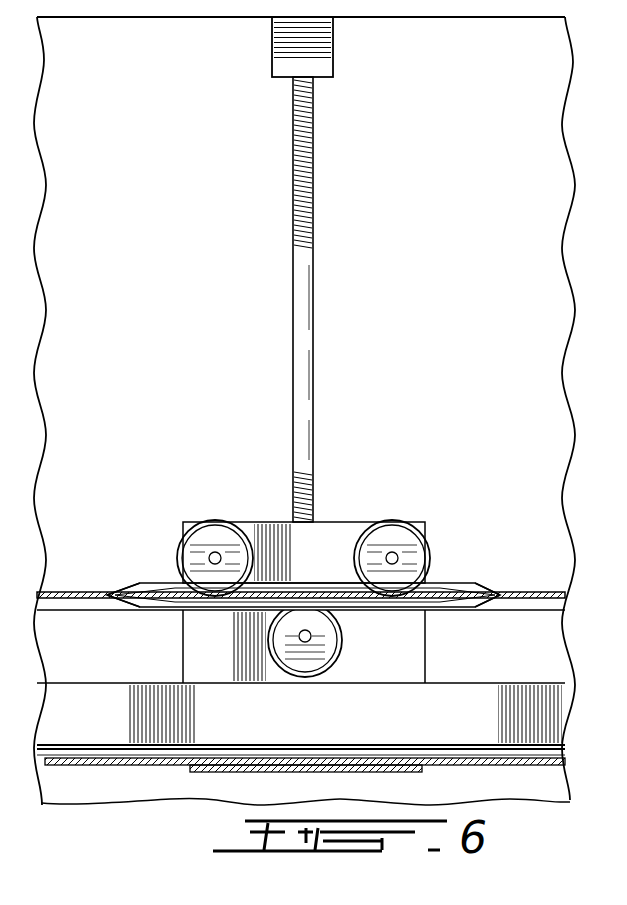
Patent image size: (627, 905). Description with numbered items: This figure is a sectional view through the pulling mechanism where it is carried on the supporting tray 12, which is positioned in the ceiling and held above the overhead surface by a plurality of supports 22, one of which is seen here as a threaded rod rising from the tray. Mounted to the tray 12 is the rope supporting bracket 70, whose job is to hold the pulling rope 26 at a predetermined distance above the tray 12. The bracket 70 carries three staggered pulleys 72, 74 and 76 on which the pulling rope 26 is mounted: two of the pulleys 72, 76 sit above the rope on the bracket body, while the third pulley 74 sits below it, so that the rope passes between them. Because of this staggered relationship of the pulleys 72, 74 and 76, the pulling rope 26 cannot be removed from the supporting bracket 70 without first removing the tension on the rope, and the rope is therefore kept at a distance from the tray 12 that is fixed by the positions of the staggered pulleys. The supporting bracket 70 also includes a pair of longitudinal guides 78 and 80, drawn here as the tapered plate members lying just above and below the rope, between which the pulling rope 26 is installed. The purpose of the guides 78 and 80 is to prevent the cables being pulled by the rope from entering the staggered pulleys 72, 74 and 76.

The supporting tray 12 is at (490, 768).
The support 22 is at (300, 335).
The pulling rope 26 is at (545, 592).
The rope supporting bracket 70 is at (378, 485).
The pulley 72 is at (218, 540).
The pulley 74 is at (330, 637).
The pulley 76 is at (423, 540).
The longitudinal guide 78 is at (155, 583).
The longitudinal guide 80 is at (152, 608).